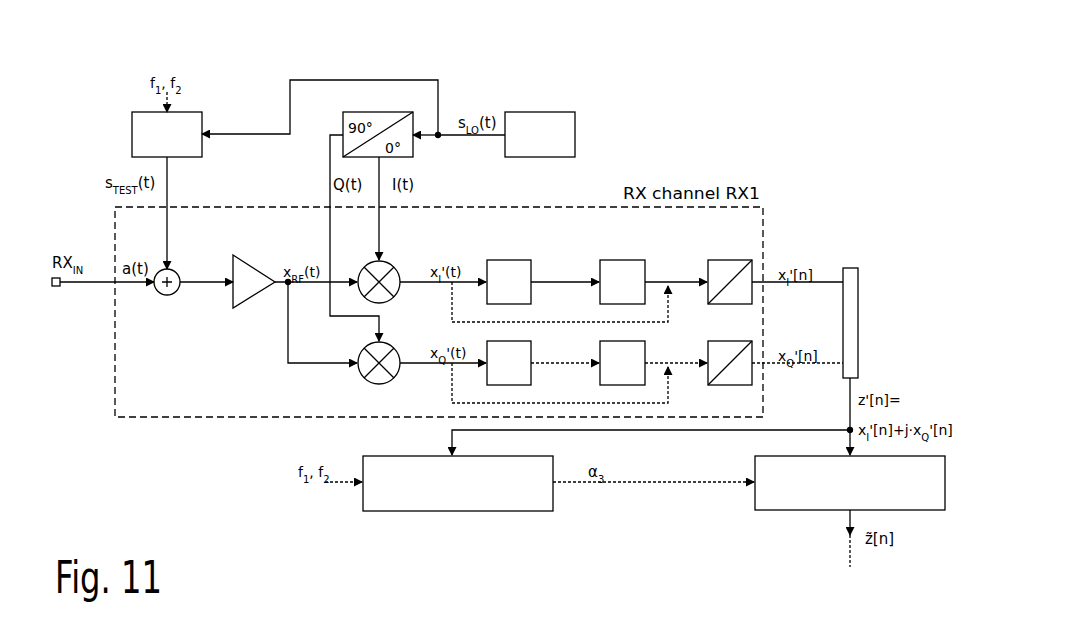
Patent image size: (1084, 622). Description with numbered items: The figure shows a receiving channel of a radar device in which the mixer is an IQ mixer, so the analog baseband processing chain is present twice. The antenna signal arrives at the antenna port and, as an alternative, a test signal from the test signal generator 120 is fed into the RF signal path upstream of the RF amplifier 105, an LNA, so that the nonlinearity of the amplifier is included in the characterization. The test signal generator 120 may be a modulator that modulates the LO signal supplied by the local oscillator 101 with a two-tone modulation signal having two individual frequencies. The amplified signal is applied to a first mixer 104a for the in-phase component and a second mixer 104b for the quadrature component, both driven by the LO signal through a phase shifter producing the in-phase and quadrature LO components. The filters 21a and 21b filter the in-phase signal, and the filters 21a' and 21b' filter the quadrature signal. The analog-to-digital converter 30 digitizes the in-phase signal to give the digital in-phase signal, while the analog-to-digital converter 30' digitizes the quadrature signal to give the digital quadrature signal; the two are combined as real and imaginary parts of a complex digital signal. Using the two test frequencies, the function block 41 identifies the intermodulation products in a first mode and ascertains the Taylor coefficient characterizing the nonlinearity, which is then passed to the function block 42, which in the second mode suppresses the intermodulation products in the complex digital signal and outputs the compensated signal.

The test signal generator 120 is at (202, 112).
The local oscillator 101 is at (575, 137).
The RF amplifier 105 is at (278, 240).
The first mixer 104a is at (393, 266).
The second mixer 104b is at (365, 378).
The filter 21b is at (521, 263).
The filter 21a is at (629, 263).
The analog-to-digital converter 30 is at (730, 263).
The filter 21b' is at (540, 361).
The filter 21a' is at (652, 361).
The analog-to-digital converter 30' is at (730, 347).
The function block 41 is at (527, 512).
The function block 42 is at (760, 512).